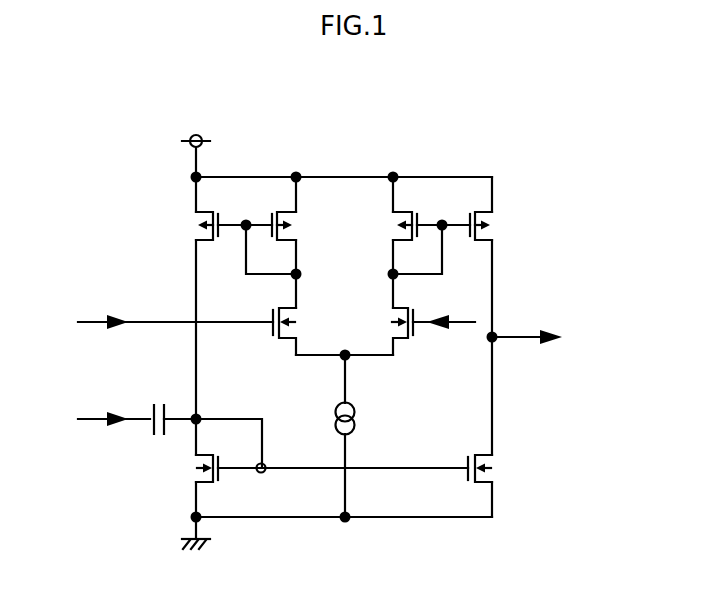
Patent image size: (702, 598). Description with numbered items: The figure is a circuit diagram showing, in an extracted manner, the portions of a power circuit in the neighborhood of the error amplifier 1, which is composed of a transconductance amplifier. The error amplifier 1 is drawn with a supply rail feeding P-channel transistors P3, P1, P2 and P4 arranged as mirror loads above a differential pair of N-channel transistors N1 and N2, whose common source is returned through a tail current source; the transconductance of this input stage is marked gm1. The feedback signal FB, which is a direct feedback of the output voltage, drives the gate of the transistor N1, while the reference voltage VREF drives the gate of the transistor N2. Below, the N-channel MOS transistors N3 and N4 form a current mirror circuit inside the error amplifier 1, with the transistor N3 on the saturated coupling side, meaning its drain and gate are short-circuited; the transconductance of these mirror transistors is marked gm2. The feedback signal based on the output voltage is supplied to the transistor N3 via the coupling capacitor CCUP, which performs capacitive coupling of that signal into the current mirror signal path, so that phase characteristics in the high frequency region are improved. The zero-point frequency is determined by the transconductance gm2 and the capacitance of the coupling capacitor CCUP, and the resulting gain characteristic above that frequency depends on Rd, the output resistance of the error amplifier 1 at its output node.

The error amplifier 1 is at (357, 142).
The PMOS transistor P1 is at (302, 226).
The PMOS transistor P2 is at (390, 226).
The PMOS transistor P3 is at (191, 226).
The PMOS transistor P4 is at (498, 226).
The NMOS transistor N1 is at (275, 331).
The NMOS transistor N2 is at (410, 331).
The N-channel MOS transistor N3 is at (211, 468).
The NMOS transistor N4 is at (393, 468).
The first transconductance stage gm1 is at (344, 416).
The transconductance gm2 is at (344, 500).
The feedback signal FB is at (175, 313).
The reference voltage input VREF is at (444, 311).
The output resistance Rd is at (527, 348).
The coupling capacitor CCUP is at (156, 432).